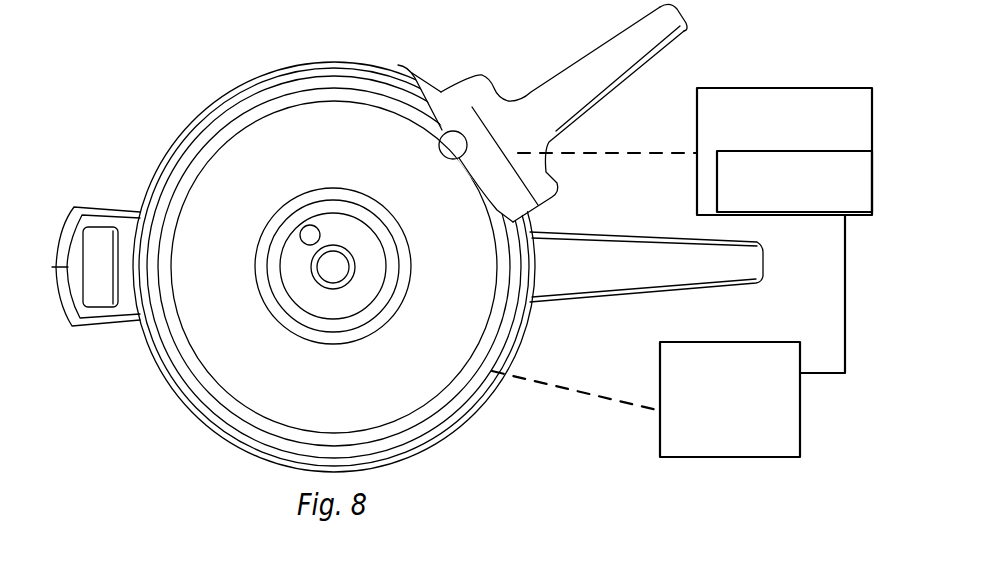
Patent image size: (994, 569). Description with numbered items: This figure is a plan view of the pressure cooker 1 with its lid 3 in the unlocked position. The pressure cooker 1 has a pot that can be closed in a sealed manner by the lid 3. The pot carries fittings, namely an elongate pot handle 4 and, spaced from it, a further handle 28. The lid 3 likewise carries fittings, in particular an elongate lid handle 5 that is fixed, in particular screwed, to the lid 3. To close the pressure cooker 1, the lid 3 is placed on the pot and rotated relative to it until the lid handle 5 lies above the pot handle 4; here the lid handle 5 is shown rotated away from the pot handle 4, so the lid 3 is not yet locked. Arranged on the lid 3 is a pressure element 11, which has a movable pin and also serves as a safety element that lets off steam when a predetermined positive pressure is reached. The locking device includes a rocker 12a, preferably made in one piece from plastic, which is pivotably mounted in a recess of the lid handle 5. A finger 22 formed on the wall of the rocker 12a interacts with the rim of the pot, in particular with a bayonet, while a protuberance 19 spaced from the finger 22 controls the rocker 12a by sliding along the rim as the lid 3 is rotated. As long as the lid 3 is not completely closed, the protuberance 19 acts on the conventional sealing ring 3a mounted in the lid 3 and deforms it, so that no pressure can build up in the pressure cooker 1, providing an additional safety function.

The pressure cooker 1 is at (183, 123).
The lid 3 is at (277, 123).
The sealing ring 3a is at (668, 336).
The pot handle 4 is at (671, 240).
The lid handle 5 is at (607, 107).
The pressure element 11 is at (400, 66).
The rocker 12a is at (695, 151).
The protuberance 19 is at (794, 181).
The finger 22 is at (455, 131).
The handle 28 is at (95, 205).